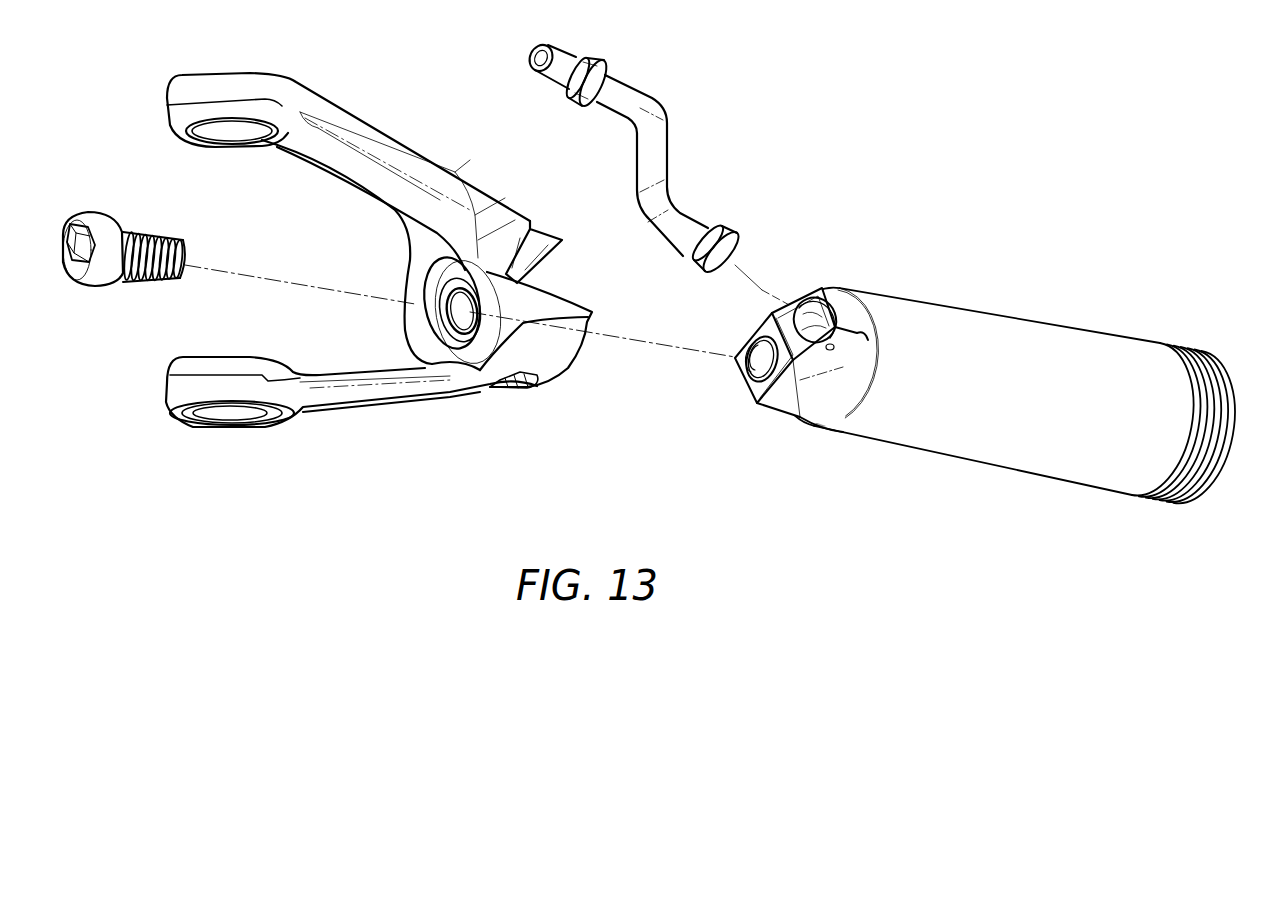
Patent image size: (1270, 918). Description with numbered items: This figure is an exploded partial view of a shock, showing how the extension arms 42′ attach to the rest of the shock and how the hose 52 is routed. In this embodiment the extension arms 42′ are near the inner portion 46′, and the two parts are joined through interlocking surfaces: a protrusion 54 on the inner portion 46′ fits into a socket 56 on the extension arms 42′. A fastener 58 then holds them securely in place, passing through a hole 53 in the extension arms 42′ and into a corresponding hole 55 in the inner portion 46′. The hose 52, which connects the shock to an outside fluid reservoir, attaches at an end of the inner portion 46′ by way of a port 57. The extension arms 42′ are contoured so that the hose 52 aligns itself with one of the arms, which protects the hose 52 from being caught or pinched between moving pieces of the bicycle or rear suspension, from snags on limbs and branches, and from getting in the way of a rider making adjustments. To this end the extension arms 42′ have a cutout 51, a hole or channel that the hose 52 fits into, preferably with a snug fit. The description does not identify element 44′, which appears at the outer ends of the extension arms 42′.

The extension arms 42′ is at (353, 123).
The yoke arm eye / bushing bore 44′ is at (233, 133).
The inner portion 46′ is at (955, 323).
The cutout 51 is at (495, 252).
The hose 52 is at (632, 93).
The hole 53 is at (447, 317).
The protrusion 54 is at (776, 402).
The hole 55 is at (743, 377).
The socket 56 is at (556, 283).
The port 57 is at (817, 308).
The fastener 58 is at (97, 275).